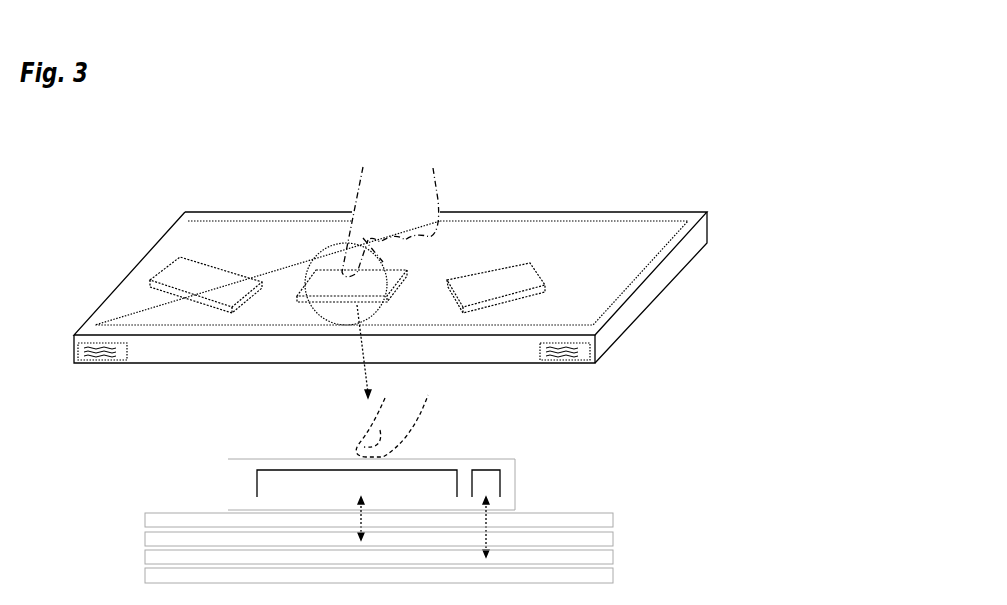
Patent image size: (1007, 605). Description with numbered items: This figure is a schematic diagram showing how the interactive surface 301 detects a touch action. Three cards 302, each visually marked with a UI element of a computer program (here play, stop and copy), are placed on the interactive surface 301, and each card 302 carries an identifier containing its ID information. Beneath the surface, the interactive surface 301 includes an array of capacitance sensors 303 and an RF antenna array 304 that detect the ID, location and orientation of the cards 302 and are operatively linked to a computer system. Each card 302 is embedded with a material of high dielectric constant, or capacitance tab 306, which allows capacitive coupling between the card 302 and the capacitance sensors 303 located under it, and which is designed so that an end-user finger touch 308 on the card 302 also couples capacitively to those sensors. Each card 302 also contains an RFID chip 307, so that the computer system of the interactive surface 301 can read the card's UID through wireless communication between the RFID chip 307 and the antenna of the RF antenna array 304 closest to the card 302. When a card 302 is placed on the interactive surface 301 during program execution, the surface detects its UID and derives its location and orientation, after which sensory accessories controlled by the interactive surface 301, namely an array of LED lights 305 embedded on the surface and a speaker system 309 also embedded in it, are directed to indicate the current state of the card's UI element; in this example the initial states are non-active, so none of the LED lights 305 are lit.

The interactive surface 301 is at (708, 212).
The card 302 is at (452, 297).
The array of capacitance sensors 303 is at (618, 538).
The RF antenna array 304 is at (618, 559).
The array of LED lights 305 is at (618, 519).
The material of high dielectric constant (capacitance tab) 306 is at (262, 480).
The RFID chip 307 is at (495, 482).
The finger touch 308 is at (348, 260).
The speaker system 309 is at (90, 363).